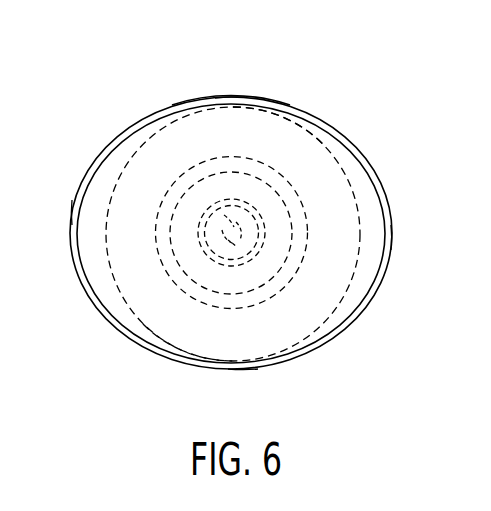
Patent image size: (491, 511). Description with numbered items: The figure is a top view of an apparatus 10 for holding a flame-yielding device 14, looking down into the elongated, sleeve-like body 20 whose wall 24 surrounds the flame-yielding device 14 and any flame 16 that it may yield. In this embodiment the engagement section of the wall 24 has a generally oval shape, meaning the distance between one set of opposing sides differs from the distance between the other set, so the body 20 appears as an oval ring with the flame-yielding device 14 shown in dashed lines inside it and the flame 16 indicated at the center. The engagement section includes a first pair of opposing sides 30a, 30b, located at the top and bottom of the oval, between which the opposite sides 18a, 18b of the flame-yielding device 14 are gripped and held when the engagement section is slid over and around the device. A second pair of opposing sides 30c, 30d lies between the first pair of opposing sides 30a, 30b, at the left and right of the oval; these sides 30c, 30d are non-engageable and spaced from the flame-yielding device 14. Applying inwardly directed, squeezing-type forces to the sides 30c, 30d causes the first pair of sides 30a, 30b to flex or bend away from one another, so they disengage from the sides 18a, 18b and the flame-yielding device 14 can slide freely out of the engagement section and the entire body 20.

The apparatus 10 is at (243, 202).
The flame-yielding device 14 is at (258, 234).
The flame 16 is at (225, 230).
The side of flame-yielding device 18a is at (293, 104).
The side of flame-yielding device 18b is at (164, 365).
The body 20 is at (231, 215).
The wall 24 is at (207, 71).
The first opposing side 30a is at (256, 66).
The first opposing side 30b is at (284, 393).
The second opposing side 30c is at (43, 177).
The second opposing side 30d is at (420, 209).